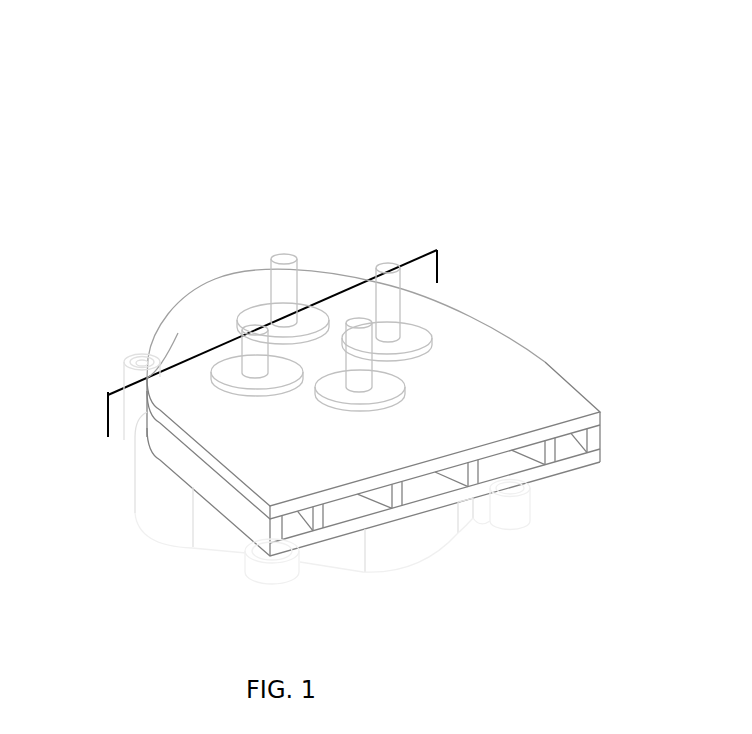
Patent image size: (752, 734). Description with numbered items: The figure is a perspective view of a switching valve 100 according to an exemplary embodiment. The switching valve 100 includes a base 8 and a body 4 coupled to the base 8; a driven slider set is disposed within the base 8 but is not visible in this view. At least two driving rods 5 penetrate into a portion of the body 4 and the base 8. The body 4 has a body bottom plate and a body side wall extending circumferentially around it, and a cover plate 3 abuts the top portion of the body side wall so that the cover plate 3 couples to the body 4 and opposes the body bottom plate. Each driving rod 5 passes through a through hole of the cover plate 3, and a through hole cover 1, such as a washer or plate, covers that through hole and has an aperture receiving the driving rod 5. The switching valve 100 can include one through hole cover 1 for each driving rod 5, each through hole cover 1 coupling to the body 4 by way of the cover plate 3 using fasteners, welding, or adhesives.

The switching valve 100 is at (176, 140).
The through hole cover 1 is at (415, 333).
The cover plate 3 is at (198, 322).
The body 4 is at (203, 479).
The driving rod 5 is at (282, 288).
The base 8 is at (205, 535).